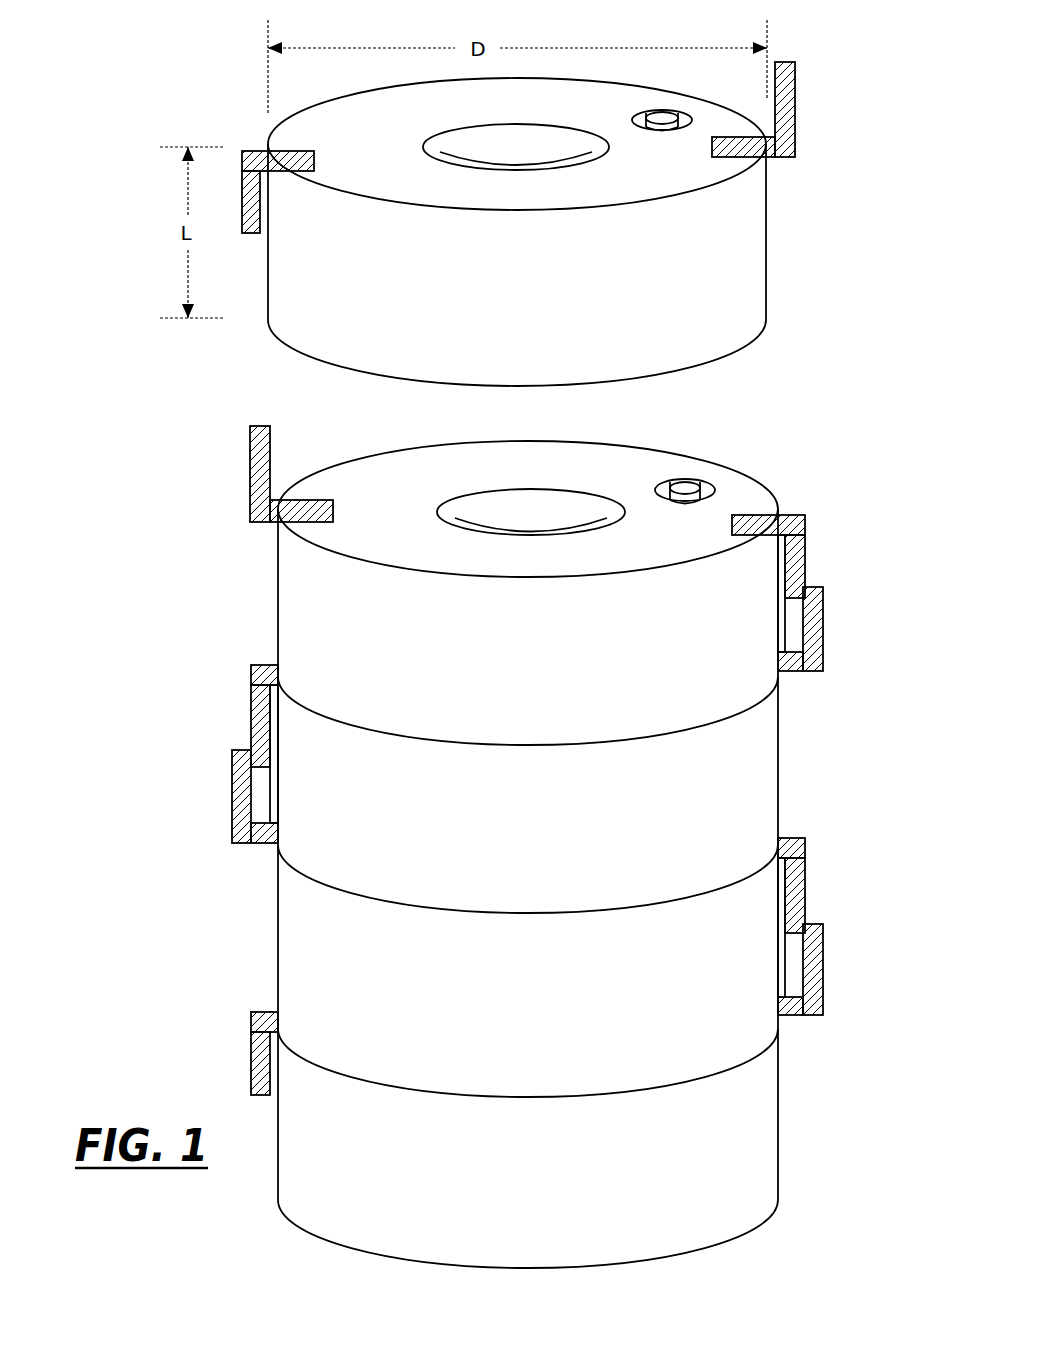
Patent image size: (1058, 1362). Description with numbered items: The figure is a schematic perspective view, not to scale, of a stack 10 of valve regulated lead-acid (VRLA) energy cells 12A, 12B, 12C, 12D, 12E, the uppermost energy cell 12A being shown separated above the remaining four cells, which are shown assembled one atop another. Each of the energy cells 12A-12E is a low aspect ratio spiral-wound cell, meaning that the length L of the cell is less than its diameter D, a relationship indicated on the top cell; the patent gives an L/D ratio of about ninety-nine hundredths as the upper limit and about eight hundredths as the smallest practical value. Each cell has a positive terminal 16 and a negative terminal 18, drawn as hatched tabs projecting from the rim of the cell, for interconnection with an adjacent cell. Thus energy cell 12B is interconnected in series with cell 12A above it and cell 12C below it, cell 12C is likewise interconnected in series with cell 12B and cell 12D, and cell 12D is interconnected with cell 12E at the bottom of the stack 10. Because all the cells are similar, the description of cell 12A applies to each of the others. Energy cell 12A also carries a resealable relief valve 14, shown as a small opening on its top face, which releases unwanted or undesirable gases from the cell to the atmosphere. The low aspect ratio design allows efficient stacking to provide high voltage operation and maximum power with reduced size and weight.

The stack 10 is at (222, 572).
The energy cell 12A is at (494, 306).
The energy cell 12B is at (521, 672).
The energy cell 12C is at (529, 837).
The energy cell 12D is at (521, 1026).
The energy cell 12E is at (536, 1184).
The resealable relief valve 14 is at (665, 120).
The positive terminal 16 is at (797, 72).
The negative terminal 18 is at (258, 160).